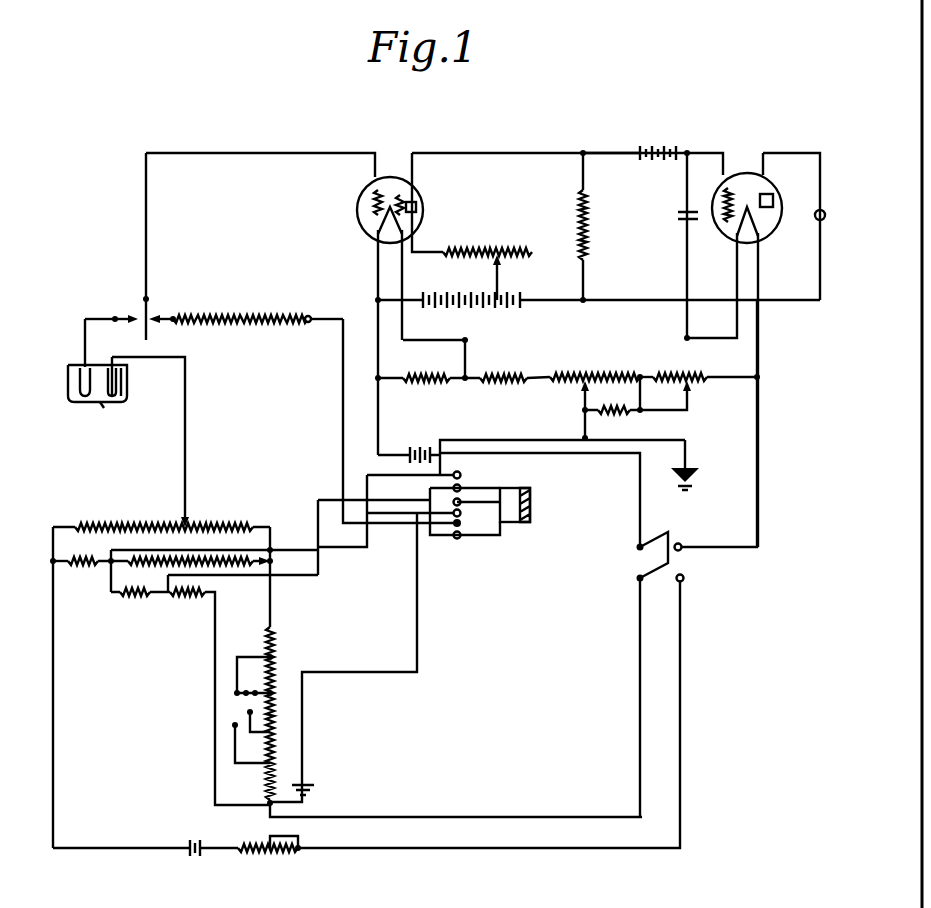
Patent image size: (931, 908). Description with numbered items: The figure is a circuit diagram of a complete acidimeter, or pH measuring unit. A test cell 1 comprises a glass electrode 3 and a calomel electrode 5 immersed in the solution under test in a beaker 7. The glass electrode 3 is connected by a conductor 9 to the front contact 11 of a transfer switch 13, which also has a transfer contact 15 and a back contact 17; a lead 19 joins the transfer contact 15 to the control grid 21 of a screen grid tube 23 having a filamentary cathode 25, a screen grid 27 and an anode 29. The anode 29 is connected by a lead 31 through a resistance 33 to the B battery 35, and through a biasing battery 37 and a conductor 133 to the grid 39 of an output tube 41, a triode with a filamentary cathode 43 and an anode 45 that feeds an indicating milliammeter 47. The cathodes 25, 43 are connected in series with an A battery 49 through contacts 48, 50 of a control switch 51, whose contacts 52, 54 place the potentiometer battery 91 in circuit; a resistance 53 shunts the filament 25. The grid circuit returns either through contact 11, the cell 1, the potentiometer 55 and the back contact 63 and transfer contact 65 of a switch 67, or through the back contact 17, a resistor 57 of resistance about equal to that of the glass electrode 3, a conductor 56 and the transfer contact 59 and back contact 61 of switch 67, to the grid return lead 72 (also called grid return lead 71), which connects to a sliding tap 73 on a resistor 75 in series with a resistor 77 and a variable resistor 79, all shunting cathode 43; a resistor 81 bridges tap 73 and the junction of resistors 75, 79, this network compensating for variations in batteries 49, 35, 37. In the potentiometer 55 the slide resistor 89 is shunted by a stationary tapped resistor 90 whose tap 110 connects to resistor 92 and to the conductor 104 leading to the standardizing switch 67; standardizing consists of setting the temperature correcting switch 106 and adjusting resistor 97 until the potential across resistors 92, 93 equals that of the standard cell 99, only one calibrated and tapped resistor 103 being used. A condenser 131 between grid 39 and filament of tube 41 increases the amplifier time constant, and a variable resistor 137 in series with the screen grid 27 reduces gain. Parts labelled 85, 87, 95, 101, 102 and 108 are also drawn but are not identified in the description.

The test cell 1 is at (70, 405).
The glass electrode 3 is at (78, 362).
The calomel electrode 5 is at (122, 382).
The beaker 7 is at (104, 406).
The conductor 9 is at (93, 318).
The front contact 11 is at (124, 324).
The transfer switch 13 is at (140, 288).
The transfer contact 15 is at (143, 300).
The back contact 17 is at (172, 325).
The lead 19 is at (268, 152).
The control grid 21 is at (358, 205).
The screen grid tube 23 is at (368, 183).
The filamentary cathode 25 is at (366, 230).
The screen grid 27 is at (418, 208).
The anode 29 is at (415, 198).
The lead 31 is at (500, 152).
The resistance 33 is at (578, 206).
The B battery 35 is at (463, 292).
The biasing battery 37 is at (657, 143).
The grid 39 is at (724, 192).
The output tube 41 is at (742, 174).
The filamentary cathode 43 is at (762, 228).
The anode 45 is at (774, 195).
The indicating milliammeter 47 is at (815, 213).
The contact 48 is at (722, 547).
The A battery 49 is at (420, 446).
The contact 50 is at (630, 536).
The control switch 51 is at (662, 528).
The contact 52 is at (643, 582).
The resistance 53 is at (427, 371).
The contact 54 is at (684, 580).
The potentiometer 55 is at (108, 630).
The conductor 56 is at (356, 405).
The resistor 57 is at (258, 326).
The transfer contact 59 is at (472, 538).
The back contact 61 is at (510, 538).
The back contact 63 is at (502, 493).
The transfer contact 65 is at (494, 496).
The standardizing switch 67 is at (531, 490).
The grid return lead 71 is at (297, 578).
The grid return lead 72 is at (582, 432).
The sliding tap 73 is at (581, 389).
The resistor 75 is at (573, 372).
The resistor 77 is at (503, 372).
The variable resistor 79 is at (686, 372).
The resistor 81 is at (638, 395).
The conductor 85 is at (188, 432).
The slide wire resistor 87 is at (190, 515).
The slide resistor 89 is at (238, 522).
The stationary tapped resistor 90 is at (145, 558).
The potentiometer battery 91 is at (195, 840).
The resistor 92 is at (134, 596).
The resistor 93 is at (183, 596).
The tapped resistor 95 is at (275, 635).
The resistor 97 is at (272, 852).
The standard cell 99 is at (310, 784).
The conductor 101 is at (420, 635).
The relay contact 102 is at (520, 522).
The calibrated and tapped resistor 103 is at (275, 770).
The conductor 104 is at (352, 548).
The temperature correcting switch 106 is at (235, 690).
The conductor 108 is at (500, 482).
The tap 110 is at (108, 568).
The condenser 131 is at (681, 216).
The conductor 133 is at (612, 145).
The variable resistor 137 is at (496, 243).